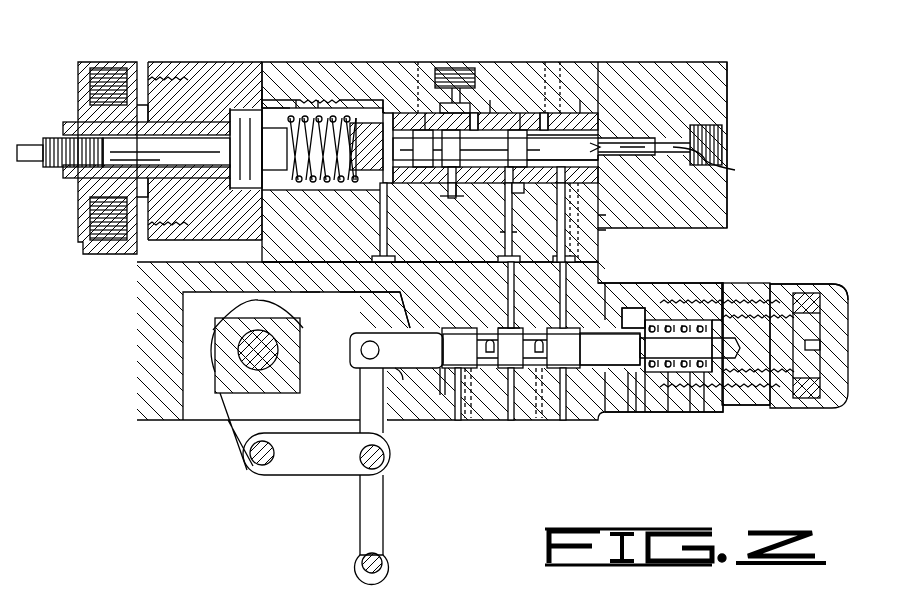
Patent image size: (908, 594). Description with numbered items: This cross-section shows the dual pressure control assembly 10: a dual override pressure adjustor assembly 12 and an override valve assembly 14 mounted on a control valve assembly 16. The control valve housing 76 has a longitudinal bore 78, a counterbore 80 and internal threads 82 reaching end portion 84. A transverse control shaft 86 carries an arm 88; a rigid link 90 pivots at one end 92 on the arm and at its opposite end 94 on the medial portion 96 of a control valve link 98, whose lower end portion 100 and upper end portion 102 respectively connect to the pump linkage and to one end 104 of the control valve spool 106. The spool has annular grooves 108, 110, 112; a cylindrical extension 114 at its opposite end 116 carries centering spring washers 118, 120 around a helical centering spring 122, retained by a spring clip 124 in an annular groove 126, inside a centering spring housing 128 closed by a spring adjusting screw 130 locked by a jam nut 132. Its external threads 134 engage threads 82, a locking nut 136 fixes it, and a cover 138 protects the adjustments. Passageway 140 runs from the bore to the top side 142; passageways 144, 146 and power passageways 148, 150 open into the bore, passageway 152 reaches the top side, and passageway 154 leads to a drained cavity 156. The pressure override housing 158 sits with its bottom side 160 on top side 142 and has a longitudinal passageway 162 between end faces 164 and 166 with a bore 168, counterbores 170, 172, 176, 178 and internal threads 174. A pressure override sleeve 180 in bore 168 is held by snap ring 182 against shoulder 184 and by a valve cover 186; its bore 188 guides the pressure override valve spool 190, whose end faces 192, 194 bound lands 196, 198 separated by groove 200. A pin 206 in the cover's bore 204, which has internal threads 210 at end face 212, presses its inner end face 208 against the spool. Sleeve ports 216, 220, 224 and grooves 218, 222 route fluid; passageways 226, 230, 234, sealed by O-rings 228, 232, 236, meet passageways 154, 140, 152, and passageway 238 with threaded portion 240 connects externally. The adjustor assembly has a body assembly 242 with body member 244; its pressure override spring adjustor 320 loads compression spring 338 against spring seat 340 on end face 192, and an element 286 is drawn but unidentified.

The dual pressure control assembly 10 is at (246, 52).
The dual override pressure adjustor assembly 12 is at (165, 62).
The override valve assembly 14 is at (367, 58).
The control valve assembly 16 is at (690, 282).
The control valve housing 76 is at (137, 302).
The longitudinal bore 78 is at (405, 328).
The counterbore 80 is at (648, 318).
The internal threads 82 is at (700, 318).
The end portion 84 is at (742, 292).
The transverse control shaft 86 is at (252, 355).
The arm 88 is at (230, 438).
The rigid link 90 is at (303, 475).
The one end 92 is at (254, 476).
The opposite end 94 is at (386, 457).
The medial portion 96 is at (383, 430).
The control valve link 98 is at (383, 496).
The lower end portion 100 is at (390, 558).
The upper end portion 102 is at (358, 378).
The one end 104 is at (352, 346).
The control valve spool 106 is at (403, 372).
The first annular groove 108 is at (510, 420).
The second annular groove 110 is at (445, 350).
The third annular groove 112 is at (556, 348).
The cylindrical extension 114 is at (648, 412).
The opposite end 116 is at (622, 412).
The centering spring washer 118 is at (637, 412).
The centering spring washer 120 is at (690, 412).
The helical centering spring 122 is at (668, 412).
The spring clip 124 is at (704, 412).
The annular groove 126 is at (733, 408).
The centering spring housing 128 is at (662, 318).
The spring adjusting screw 130 is at (812, 333).
The threaded jam nut 132 is at (822, 300).
The external threads 134 is at (730, 300).
The locking nut 136 is at (755, 284).
The cover 138 is at (830, 283).
The passageway 140 is at (508, 312).
The top side 142 is at (440, 258).
The second passageway 144 is at (440, 388).
The third passageway 146 is at (580, 420).
The first power passageway 148 is at (470, 420).
The second power passageway 150 is at (540, 420).
The passageway 152 is at (630, 316).
The passageway 154 is at (393, 300).
The cavity 156 is at (338, 290).
The pressure override housing 158 is at (545, 110).
The bottom side 160 is at (344, 275).
The longitudinal passageway 162 is at (386, 110).
The first end face 164 is at (262, 95).
The second end face 166 is at (626, 100).
The cylindrical bore 168 is at (492, 112).
The first counterbore 170 is at (375, 113).
The second counterbore 172 is at (318, 100).
The internal threads 174 is at (298, 98).
The counterbore 176 is at (270, 106).
The counterbore 178 is at (585, 95).
The pressure override sleeve 180 is at (420, 110).
The annular snap ring 182 is at (580, 110).
The annular shoulder 184 is at (548, 112).
The valve cover 186 is at (712, 92).
The longitudinal bore 188 is at (512, 112).
The pressure override valve spool 190 is at (495, 148).
The first end face 192 is at (372, 106).
The second end face 194 is at (618, 143).
The first annular land 196 is at (428, 112).
The second annular land 198 is at (553, 148).
The annular groove 200 is at (474, 115).
The longitudinal bore 204 is at (690, 150).
The piston or pin 206 is at (700, 160).
The inner end face 208 is at (600, 150).
The internal threads 210 is at (722, 140).
The end face 212 is at (727, 112).
The pair of ports 216 is at (448, 190).
The annular groove 218 is at (455, 180).
The second pair of ports 220 is at (520, 112).
The second annular groove 222 is at (516, 190).
The third pair of ports 224 is at (598, 104).
The passageway 226 is at (383, 220).
The O-ring 228 is at (372, 258).
The passageway 230 is at (504, 233).
The O-ring 232 is at (500, 272).
The passageway 234 is at (598, 222).
The O-ring 236 is at (560, 295).
The passageway 238 is at (458, 68).
The internally threaded portion 240 is at (450, 95).
The body assembly 242 is at (170, 62).
The body member 244 is at (78, 100).
The threads 286 is at (106, 70).
The pressure override spring adjustor 320 is at (82, 178).
The pressure override compression spring 338 is at (320, 182).
The pressure override spring seat 340 is at (352, 115).